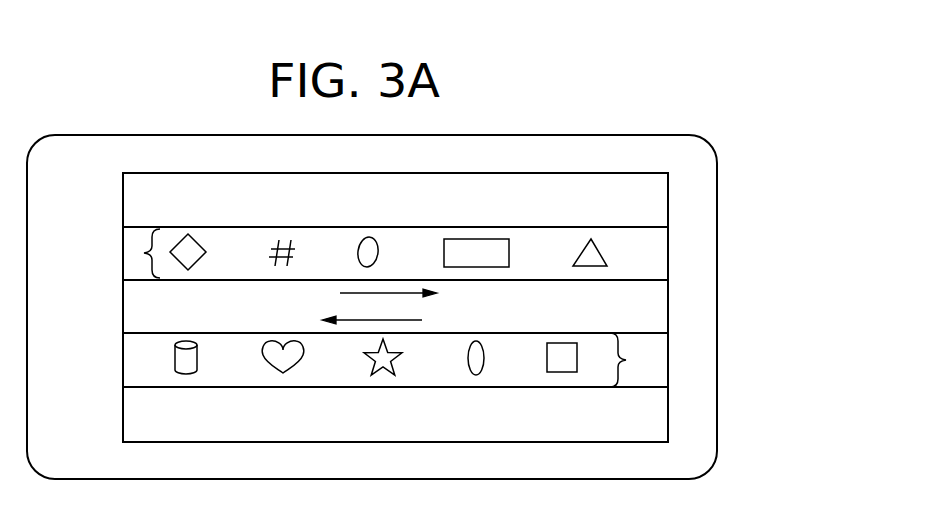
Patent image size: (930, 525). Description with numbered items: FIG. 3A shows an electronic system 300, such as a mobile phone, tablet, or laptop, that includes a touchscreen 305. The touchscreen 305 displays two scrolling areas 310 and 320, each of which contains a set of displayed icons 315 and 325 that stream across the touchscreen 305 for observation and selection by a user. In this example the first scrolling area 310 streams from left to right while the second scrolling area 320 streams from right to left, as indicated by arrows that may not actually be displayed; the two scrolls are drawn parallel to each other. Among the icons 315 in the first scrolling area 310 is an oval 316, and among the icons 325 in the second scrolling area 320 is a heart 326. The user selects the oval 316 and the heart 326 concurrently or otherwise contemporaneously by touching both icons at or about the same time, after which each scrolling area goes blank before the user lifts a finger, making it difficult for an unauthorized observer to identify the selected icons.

The electronic system 300 is at (717, 213).
The touchscreen 305 is at (668, 402).
The scrolling area 310 is at (535, 227).
The set of displayed icons 315 is at (328, 237).
The oval 316 is at (358, 258).
The scrolling area 320 is at (508, 333).
The set of displayed icons 325 is at (481, 348).
The heart 326 is at (266, 360).